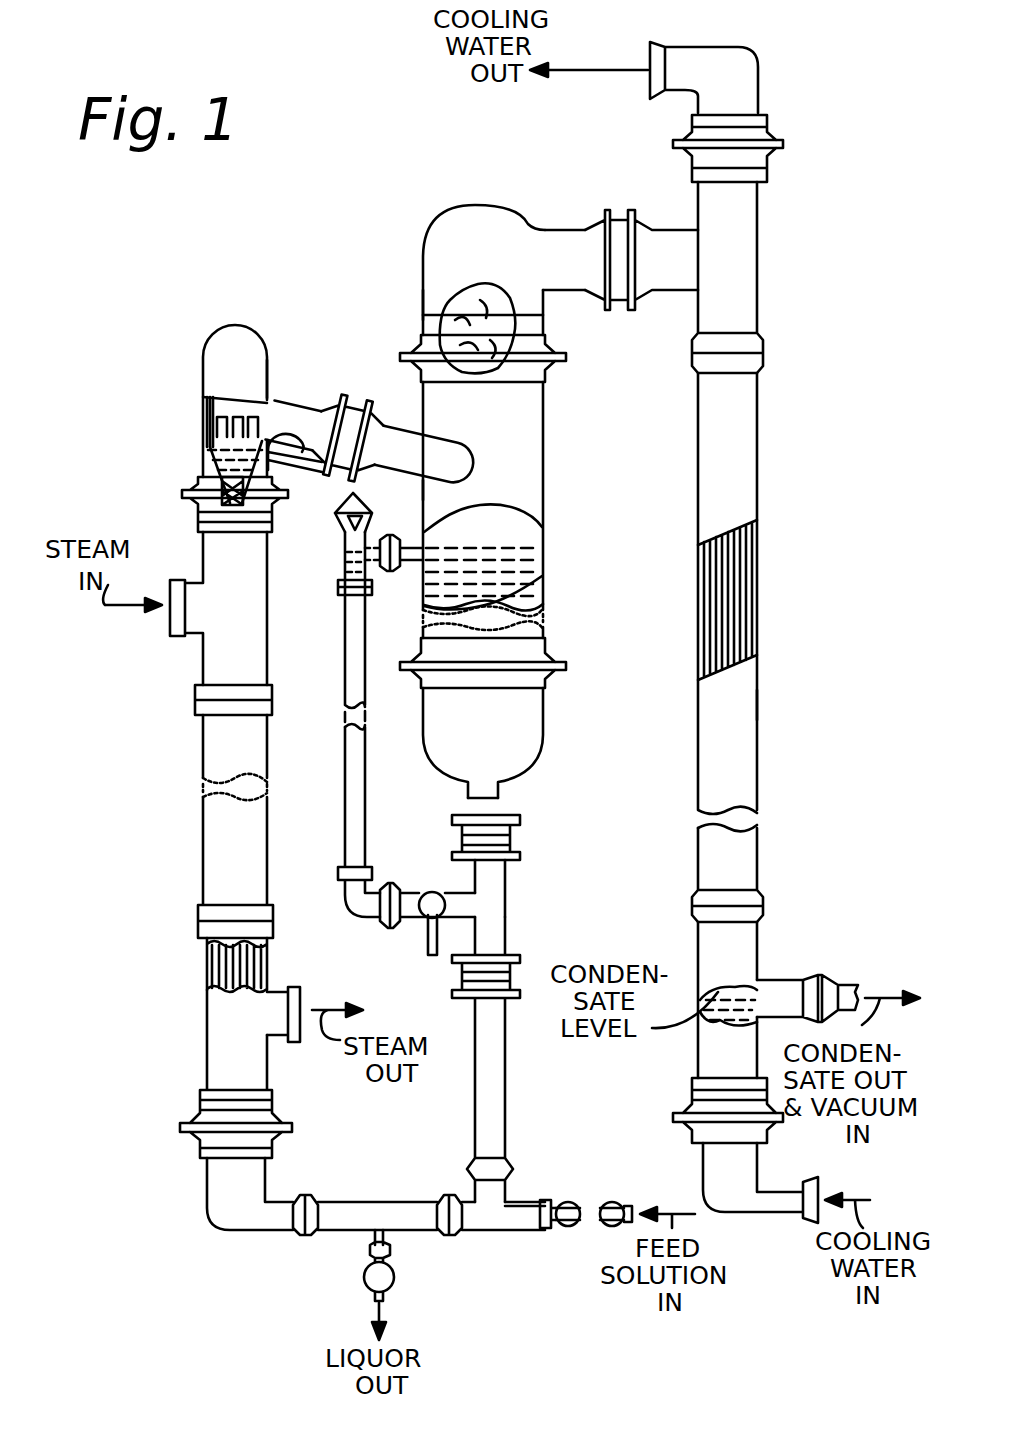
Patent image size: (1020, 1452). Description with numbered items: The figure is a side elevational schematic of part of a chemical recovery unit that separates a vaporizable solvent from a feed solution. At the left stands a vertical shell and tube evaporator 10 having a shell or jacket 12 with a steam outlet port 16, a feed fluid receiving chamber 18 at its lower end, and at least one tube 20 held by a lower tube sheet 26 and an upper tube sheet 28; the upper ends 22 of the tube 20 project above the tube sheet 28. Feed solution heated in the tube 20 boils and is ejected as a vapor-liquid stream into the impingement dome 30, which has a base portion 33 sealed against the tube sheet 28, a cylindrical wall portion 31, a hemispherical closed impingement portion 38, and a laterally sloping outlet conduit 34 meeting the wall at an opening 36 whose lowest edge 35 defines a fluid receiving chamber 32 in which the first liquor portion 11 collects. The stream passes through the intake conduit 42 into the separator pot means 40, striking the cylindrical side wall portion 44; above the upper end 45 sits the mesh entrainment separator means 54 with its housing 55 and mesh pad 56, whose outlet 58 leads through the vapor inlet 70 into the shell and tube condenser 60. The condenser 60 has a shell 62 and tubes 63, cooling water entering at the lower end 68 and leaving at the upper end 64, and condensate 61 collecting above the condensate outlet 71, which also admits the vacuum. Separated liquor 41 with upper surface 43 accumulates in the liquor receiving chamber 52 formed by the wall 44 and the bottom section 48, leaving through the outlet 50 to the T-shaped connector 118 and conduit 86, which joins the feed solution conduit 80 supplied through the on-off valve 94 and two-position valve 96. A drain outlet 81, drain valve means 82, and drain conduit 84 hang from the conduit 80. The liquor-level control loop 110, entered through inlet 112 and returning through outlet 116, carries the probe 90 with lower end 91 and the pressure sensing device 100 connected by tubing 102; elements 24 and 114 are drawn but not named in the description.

The vertical shell and tube evaporator 10 is at (200, 826).
The first liquid or liquor portion 11 is at (215, 458).
The shell or jacket 12 is at (216, 756).
The outlet port 16 is at (284, 994).
The feed fluid receiving chamber 18 is at (207, 1192).
The tube 20 is at (207, 980).
The upper end of tubes 22 is at (208, 400).
The distribution tubes 24 is at (222, 425).
The tube sheet 26 is at (195, 1128).
The tube sheet 28 is at (186, 498).
The impingement dome 30 is at (254, 372).
The cylindrical wall portion 31 is at (269, 388).
The fluid receiving chamber 32 is at (205, 454).
The base portion 33 is at (222, 480).
The outlet conduit 34 is at (330, 412).
The lowest edge 35 is at (294, 465).
The opening 36 is at (280, 435).
The closed impingement portion 38 is at (221, 332).
The separator pot means 40 is at (555, 480).
The liquor 41 is at (478, 577).
The intake or inlet conduit 42 is at (395, 437).
The upper surface 43 is at (520, 548).
The cylindrical side wall portion 44 is at (525, 493).
The upper end 45 is at (552, 368).
The bottom section 48 is at (538, 716).
The outlet 50 is at (503, 788).
The liquor receiving chamber 52 is at (534, 592).
The mesh entrainment separator means 54 is at (496, 257).
The housing 55 is at (440, 247).
The mesh entrainment separator pad 56 is at (440, 332).
The outlet 58 is at (556, 230).
The shell and tube condenser 60 is at (778, 675).
The vapor condensate 61 is at (740, 1026).
The shell 62 is at (758, 458).
The tubes 63 is at (740, 588).
The upper end 64 is at (758, 98).
The lower end 68 is at (778, 1213).
The vapor inlet 70 is at (672, 229).
The condensate outlet 71 is at (778, 980).
The feed solution conduit 80 is at (341, 1202).
The drain outlet 81 is at (371, 1248).
The drain valve means 82 is at (396, 1276).
The drain conduit 84 is at (386, 1298).
The conduit 86 is at (505, 1090).
The liquor level sensing device or probe 90 is at (345, 540).
The lower end 91 is at (346, 556).
The on-off valve 94 is at (614, 1201).
The two-position valve 96 is at (566, 1201).
The pressure sensing device 100 is at (421, 916).
The tubing 102 is at (425, 954).
The liquor-level control loop 110 is at (346, 752).
The intake or inlet 112 is at (401, 568).
The overflow pipe 114 is at (348, 650).
The outlet 116 is at (456, 891).
The T-shaped connector 118 is at (502, 898).